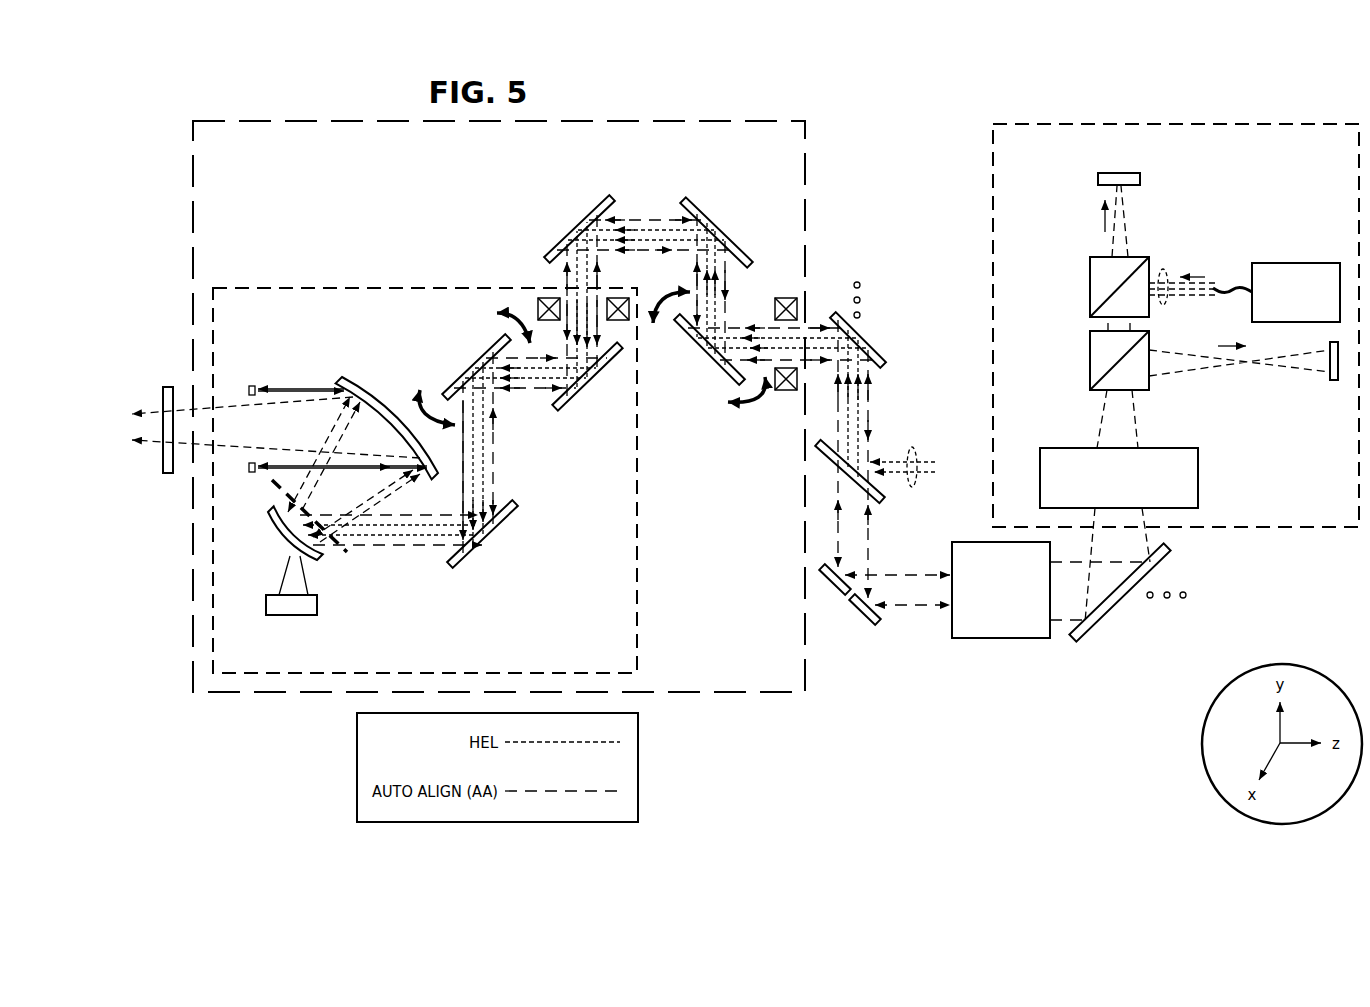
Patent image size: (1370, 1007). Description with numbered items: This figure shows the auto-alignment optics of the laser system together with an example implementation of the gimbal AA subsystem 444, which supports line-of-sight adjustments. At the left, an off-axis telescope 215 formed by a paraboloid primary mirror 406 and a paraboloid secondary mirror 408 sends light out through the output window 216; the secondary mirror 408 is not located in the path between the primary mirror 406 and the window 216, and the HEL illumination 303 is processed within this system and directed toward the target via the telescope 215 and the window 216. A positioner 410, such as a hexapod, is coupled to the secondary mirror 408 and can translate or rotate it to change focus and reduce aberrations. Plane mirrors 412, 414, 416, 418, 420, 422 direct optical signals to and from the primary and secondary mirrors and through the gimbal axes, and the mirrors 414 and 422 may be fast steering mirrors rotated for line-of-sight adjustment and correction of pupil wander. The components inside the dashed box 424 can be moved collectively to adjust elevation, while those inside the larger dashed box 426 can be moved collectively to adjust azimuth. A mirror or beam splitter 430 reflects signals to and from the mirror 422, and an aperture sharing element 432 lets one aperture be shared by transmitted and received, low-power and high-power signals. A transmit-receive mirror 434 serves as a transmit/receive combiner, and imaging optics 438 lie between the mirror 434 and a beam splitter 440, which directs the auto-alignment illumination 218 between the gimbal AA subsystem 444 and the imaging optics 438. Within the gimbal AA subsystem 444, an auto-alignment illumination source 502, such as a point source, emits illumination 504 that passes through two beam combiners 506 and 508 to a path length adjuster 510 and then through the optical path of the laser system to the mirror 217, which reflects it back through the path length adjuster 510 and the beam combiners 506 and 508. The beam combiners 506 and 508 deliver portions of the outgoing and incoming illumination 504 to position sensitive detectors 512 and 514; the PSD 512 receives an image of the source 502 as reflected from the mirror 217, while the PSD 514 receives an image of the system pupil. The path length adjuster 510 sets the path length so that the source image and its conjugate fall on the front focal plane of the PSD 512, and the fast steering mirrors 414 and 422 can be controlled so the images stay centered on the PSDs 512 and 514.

The off-axis telescope 215 is at (400, 596).
The output window 216 is at (166, 385).
The mirror 217 is at (251, 385).
The auto-alignment illumination 218 is at (869, 563).
The HEL illumination 303 is at (913, 449).
The primary mirror 406 is at (373, 398).
The secondary mirror 408 is at (318, 562).
The positioner 410 is at (292, 617).
The mirror 412 is at (488, 540).
The fast steering mirror 414 is at (474, 361).
The mirror 416 is at (556, 405).
The mirror 418 is at (580, 226).
The mirror 420 is at (720, 224).
The fast steering mirror 422 is at (700, 352).
The dashed box 424 is at (380, 286).
The dashed box 426 is at (380, 117).
The mirror or beam splitter 430 is at (870, 338).
The aperture sharing element 432 is at (884, 500).
The transmit-receive mirror 434 is at (832, 592).
The imaging optics 438 is at (1000, 640).
The beam splitter 440 is at (1112, 617).
The gimbal AA subsystem 444 is at (1240, 120).
The auto-alignment illumination source 502 is at (1295, 263).
The illumination 504 is at (1166, 268).
The beam combiner 506 is at (1090, 286).
The beam combiner 508 is at (1090, 361).
The path length adjuster 510 is at (1198, 478).
The position sensitive detector 512 is at (1097, 178).
The position sensitive detector 514 is at (1335, 382).